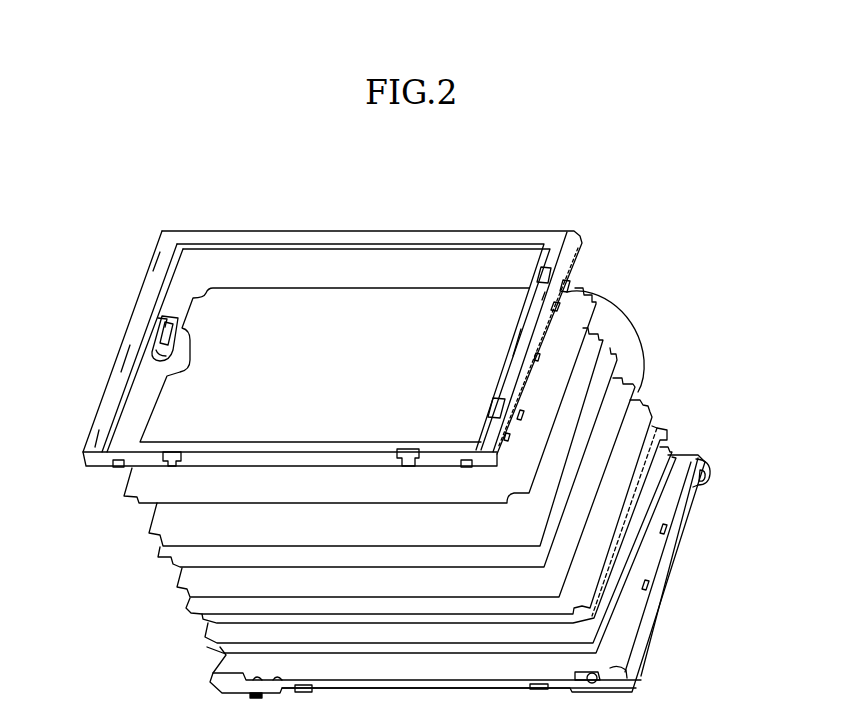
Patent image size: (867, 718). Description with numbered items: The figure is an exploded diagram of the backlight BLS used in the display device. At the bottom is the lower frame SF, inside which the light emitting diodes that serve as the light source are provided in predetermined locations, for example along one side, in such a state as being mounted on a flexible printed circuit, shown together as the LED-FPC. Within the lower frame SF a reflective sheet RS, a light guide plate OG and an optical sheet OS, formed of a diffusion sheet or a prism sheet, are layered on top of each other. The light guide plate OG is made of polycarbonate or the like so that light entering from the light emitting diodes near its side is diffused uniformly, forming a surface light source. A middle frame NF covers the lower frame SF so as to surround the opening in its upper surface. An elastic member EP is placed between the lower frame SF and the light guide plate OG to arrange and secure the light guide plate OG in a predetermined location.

The backlight BLS is at (470, 218).
The middle frame NF is at (147, 282).
The elastic member EP is at (152, 352).
The optical sheet OS is at (637, 323).
The light guide plate OG is at (628, 423).
The reflective sheet RS is at (670, 452).
The light emitting diodes mounted on a flexible printed circuit LED-FPC is at (688, 489).
The lower frame SF is at (642, 647).